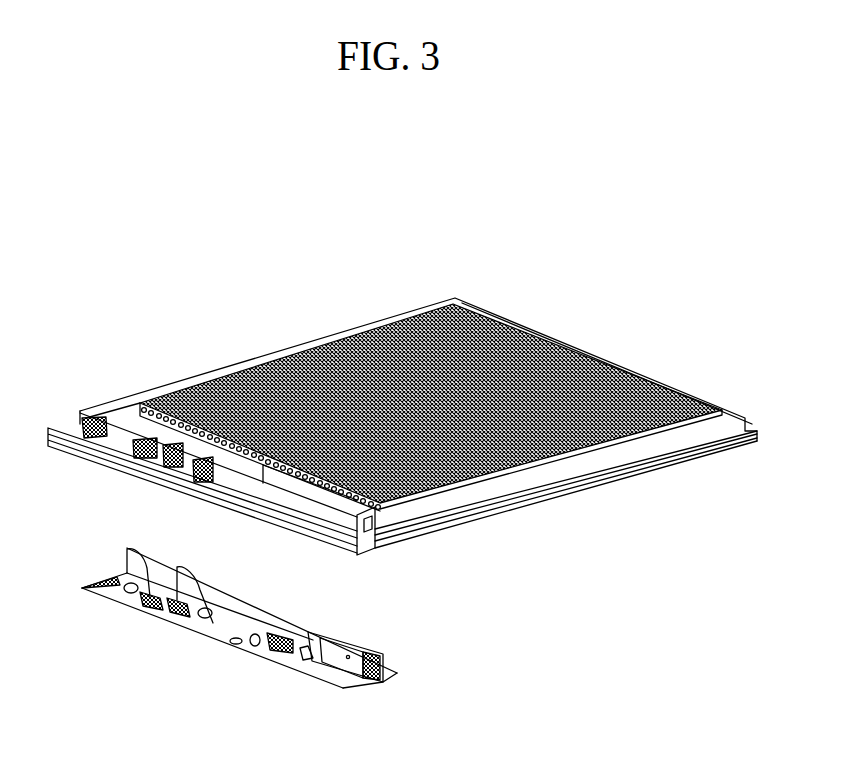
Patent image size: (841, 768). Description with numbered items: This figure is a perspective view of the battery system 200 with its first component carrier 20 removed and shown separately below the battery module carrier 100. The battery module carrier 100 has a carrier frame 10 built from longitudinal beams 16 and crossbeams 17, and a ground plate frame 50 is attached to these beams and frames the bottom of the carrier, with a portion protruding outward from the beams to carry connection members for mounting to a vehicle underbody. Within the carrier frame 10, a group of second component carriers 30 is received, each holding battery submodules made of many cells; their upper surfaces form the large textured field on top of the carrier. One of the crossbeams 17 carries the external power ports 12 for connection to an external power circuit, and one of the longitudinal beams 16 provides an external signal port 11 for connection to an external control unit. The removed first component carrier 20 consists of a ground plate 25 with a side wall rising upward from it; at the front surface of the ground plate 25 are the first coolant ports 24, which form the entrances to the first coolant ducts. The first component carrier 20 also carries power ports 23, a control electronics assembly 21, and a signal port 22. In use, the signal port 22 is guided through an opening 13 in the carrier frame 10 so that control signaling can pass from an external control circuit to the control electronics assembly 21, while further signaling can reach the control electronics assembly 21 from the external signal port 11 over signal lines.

The battery system 200 is at (76, 250).
The battery module carrier 100 is at (182, 285).
The carrier frame 10 is at (535, 484).
The external signal port 11 is at (300, 535).
The external power ports 12 is at (82, 443).
The opening 13 is at (374, 530).
The longitudinal beams 16 is at (470, 497).
The crossbeams 17 is at (273, 497).
The second component carriers 30 is at (175, 397).
The ground plate frame 50 is at (745, 427).
The first component carrier 20 is at (318, 618).
The control electronics assembly 21 is at (368, 642).
The signal port 22 is at (386, 668).
The power ports 23 is at (120, 603).
The first coolant ports 24 is at (377, 690).
The ground plate 25 is at (297, 672).